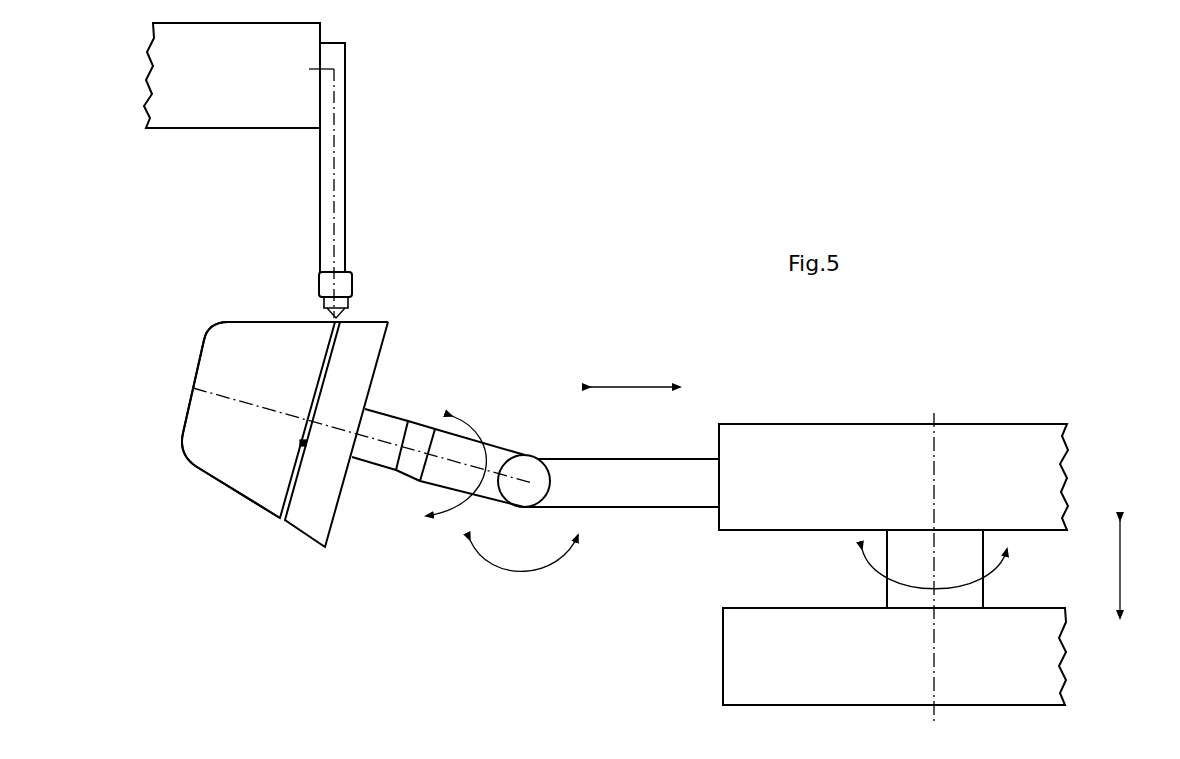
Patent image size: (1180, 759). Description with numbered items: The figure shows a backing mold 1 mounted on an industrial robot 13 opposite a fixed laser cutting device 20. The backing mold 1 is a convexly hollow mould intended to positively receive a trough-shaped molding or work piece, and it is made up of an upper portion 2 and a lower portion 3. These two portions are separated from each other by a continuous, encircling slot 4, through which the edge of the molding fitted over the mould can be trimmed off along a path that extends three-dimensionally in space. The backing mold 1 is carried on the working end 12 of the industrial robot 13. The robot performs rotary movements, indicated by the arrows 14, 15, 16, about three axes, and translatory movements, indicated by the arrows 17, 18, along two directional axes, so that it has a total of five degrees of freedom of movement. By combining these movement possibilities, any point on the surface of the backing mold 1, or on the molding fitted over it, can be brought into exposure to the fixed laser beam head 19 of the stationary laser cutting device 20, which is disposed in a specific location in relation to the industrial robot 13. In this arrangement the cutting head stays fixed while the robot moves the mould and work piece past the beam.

The backing mold 1 is at (256, 318).
The upper portion 2 is at (224, 448).
The lower portion 3 is at (322, 515).
The slot 4 is at (302, 444).
The working end 12 is at (411, 420).
The industrial robot 13 is at (1020, 435).
The arrow 14 is at (480, 423).
The arrow 15 is at (506, 568).
The arrow 16 is at (860, 578).
The arrow 17 is at (628, 386).
The arrow 18 is at (1121, 565).
The laser beam head 19 is at (342, 223).
The laser cutting device 20 is at (233, 107).